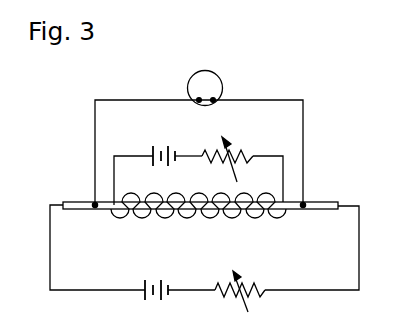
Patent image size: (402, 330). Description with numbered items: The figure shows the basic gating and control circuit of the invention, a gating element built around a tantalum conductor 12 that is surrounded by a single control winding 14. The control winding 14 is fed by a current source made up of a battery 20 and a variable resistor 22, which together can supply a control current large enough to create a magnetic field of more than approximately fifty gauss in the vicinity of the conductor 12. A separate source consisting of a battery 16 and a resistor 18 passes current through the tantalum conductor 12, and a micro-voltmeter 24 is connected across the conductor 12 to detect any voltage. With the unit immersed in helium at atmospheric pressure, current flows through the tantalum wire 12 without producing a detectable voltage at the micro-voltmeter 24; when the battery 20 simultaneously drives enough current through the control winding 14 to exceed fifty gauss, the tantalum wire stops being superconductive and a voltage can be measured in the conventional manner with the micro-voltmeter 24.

The tantalum conductor 12 is at (317, 203).
The control winding 14 is at (211, 217).
The battery 16 is at (158, 279).
The resistor 18 is at (242, 288).
The battery 20 is at (163, 143).
The variable resistor 22 is at (231, 155).
The micro-voltmeter 24 is at (205, 77).